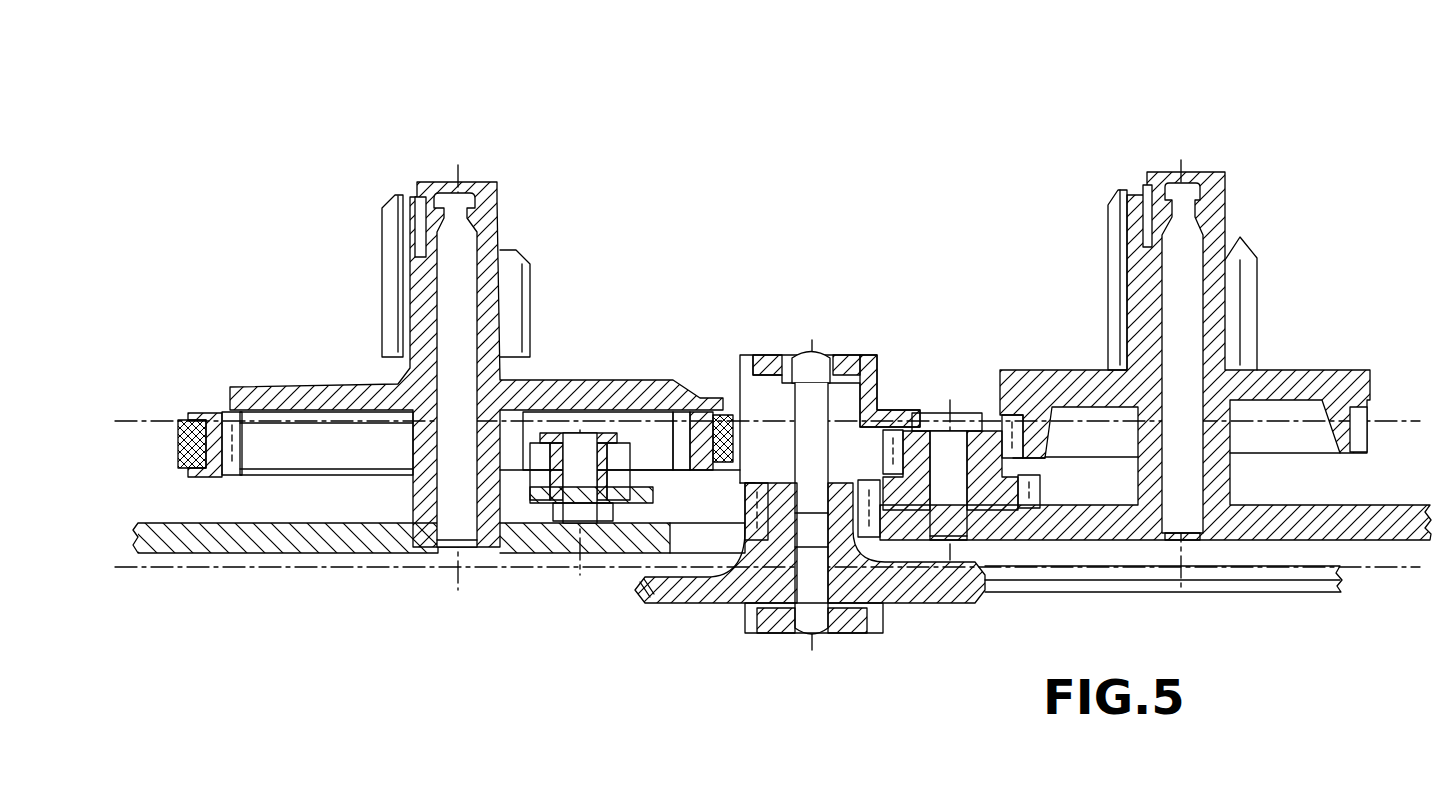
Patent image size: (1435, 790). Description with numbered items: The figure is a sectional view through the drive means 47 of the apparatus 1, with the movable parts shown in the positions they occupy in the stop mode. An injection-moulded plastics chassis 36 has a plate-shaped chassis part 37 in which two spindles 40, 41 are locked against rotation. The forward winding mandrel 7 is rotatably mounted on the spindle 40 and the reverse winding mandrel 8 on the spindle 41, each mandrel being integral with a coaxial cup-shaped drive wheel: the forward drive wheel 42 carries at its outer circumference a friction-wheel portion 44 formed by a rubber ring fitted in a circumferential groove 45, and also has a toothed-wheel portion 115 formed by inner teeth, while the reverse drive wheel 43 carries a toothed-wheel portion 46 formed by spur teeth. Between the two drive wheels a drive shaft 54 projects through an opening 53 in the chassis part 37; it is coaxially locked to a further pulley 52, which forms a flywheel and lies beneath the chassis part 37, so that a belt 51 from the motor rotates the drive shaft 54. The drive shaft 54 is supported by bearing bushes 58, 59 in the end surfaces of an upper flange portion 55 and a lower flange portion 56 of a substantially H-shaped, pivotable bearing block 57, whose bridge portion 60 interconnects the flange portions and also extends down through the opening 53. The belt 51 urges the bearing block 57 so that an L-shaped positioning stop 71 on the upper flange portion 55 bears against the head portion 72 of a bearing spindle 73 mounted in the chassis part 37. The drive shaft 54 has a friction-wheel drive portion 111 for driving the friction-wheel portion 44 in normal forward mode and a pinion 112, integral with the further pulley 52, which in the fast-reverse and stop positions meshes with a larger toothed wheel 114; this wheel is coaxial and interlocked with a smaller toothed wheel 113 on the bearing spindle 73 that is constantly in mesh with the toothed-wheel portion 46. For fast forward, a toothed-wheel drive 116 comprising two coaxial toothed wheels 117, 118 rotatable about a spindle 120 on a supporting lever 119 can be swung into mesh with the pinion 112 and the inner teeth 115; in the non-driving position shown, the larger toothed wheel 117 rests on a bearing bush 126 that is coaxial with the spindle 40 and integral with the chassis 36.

The apparatus 1 is at (932, 138).
The forward winding mandrel 7 is at (490, 220).
The reverse winding mandrel 8 is at (1215, 210).
The chassis 36 is at (258, 556).
The plate-shaped chassis part 37 is at (200, 552).
The spindle 40 is at (447, 277).
The spindle 41 is at (1175, 265).
The forward drive wheel 42 is at (312, 383).
The reverse drive wheel 43 is at (1307, 375).
The friction-wheel portion 44 is at (180, 440).
The circumferential groove 45 is at (208, 452).
The toothed-wheel portion 46 is at (1360, 433).
The drive means 47 is at (598, 622).
The belt 51 is at (1253, 587).
The further pulley 52 is at (945, 590).
The opening 53 is at (690, 540).
The drive shaft 54 is at (805, 372).
The upper flange portion 55 is at (772, 360).
The lower flange portion 56 is at (782, 630).
The bearing block 57 is at (878, 348).
The bearing bush 58 is at (825, 357).
The bearing bush 59 is at (826, 633).
The bridge portion 60 is at (755, 460).
The positioning stop 71 is at (896, 430).
The head portion 72 is at (931, 420).
The bearing spindle 73 is at (962, 436).
The friction-wheel drive portion 111 is at (790, 440).
The pinion 112 is at (722, 575).
The toothed wheel 113 is at (1000, 466).
The toothed wheel 114 is at (1022, 492).
The toothed-wheel portion 115 is at (238, 448).
The toothed-wheel drive 116 is at (640, 445).
The toothed wheel 117 is at (640, 503).
The toothed wheel 118 is at (530, 440).
The supporting lever 119 is at (615, 445).
The spindle 120 is at (572, 500).
The bearing bush 126 is at (412, 480).